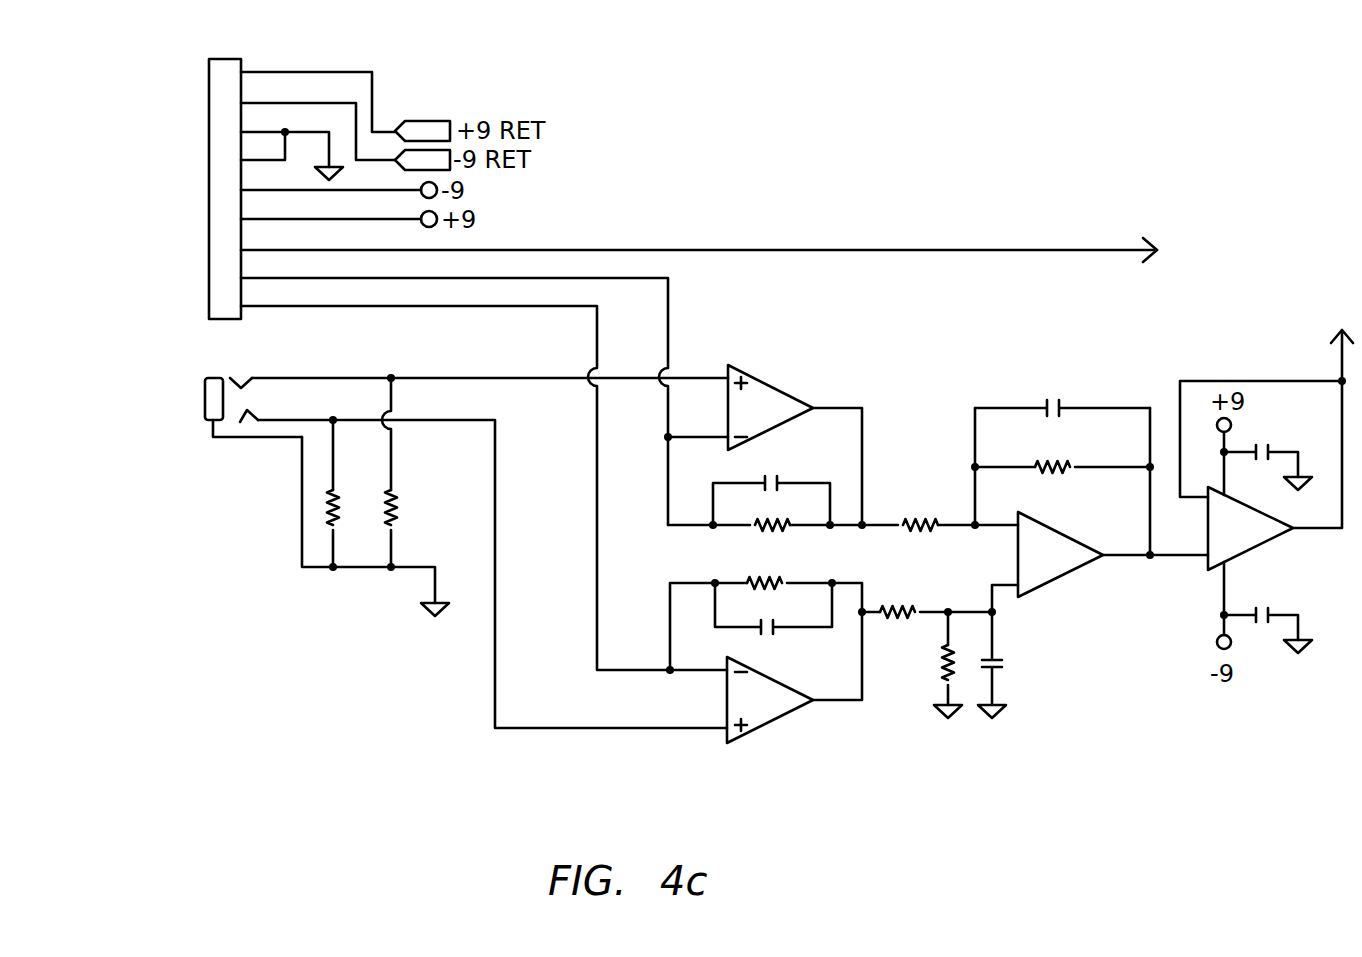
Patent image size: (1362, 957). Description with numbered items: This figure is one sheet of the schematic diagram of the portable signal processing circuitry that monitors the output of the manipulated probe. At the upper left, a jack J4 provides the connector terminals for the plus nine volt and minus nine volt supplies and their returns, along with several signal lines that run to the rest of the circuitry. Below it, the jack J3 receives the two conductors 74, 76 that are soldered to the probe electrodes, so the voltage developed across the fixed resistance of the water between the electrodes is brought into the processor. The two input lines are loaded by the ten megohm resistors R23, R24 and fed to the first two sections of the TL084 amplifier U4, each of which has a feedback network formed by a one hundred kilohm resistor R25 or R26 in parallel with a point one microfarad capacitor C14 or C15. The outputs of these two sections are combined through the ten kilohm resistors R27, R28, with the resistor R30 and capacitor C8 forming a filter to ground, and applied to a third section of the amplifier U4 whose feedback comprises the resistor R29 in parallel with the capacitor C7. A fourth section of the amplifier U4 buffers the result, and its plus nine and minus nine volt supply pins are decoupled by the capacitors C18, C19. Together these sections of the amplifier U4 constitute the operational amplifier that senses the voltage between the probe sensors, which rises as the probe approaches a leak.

The conductor 74 is at (213, 377).
The conductor 76 is at (232, 420).
The jack J4 is at (223, 172).
The jack J3 is at (255, 400).
The resistor R23 is at (358, 508).
The resistor R24 is at (416, 508).
The resistor R25 is at (775, 510).
The resistor R26 is at (773, 570).
The resistor R27 is at (926, 510).
The resistor R28 is at (906, 598).
The resistor R29 is at (1061, 452).
The resistor R30 is at (923, 662).
The capacitor C7 is at (1062, 394).
The capacitor C8 is at (1008, 658).
The capacitor C14 is at (771, 483).
The capacitor C15 is at (773, 608).
The capacitor C18 is at (1261, 446).
The capacitor C19 is at (1261, 610).
The amplifier U4 is at (1010, 554).